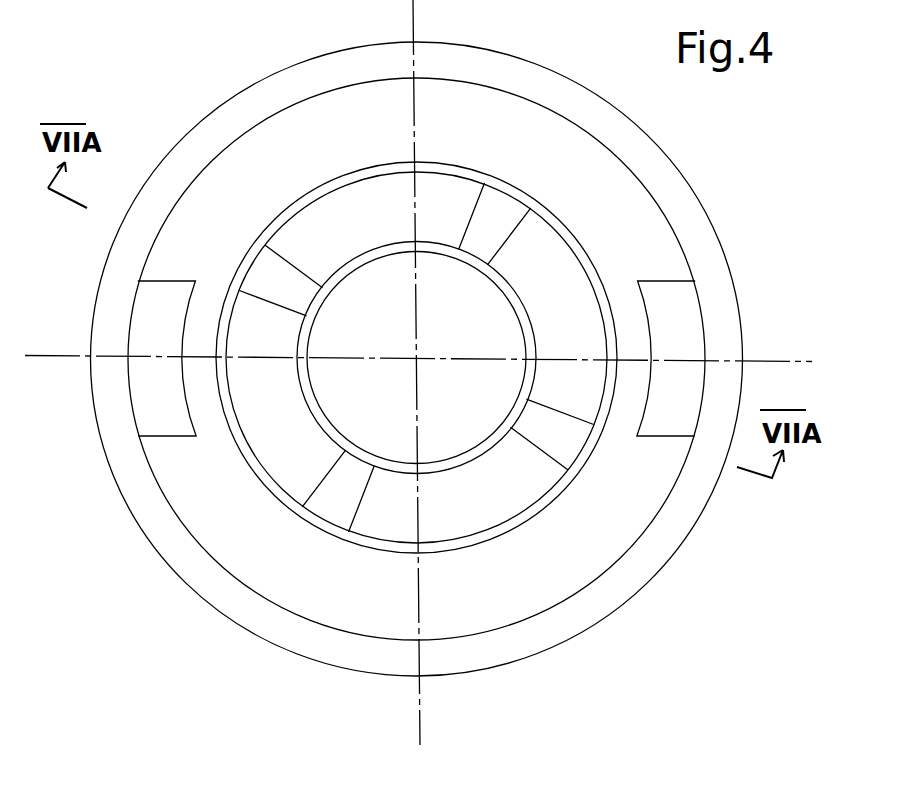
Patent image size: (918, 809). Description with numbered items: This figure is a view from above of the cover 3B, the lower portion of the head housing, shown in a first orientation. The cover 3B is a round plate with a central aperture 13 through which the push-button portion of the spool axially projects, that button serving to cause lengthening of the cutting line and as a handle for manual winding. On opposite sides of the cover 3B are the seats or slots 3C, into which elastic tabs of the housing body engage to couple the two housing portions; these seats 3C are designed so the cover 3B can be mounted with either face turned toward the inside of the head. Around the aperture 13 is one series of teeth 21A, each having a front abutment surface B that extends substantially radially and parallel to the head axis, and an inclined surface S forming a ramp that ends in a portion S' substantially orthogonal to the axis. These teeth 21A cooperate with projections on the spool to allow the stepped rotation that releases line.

The cover 3B is at (328, 58).
The seats or slots 3C is at (150, 332).
The teeth 21A is at (590, 241).
The aperture 13 is at (347, 278).
The front abutment surface B is at (276, 258).
The inclined surface S is at (446, 344).
The portion substantially orthogonal to the axis S' is at (532, 189).